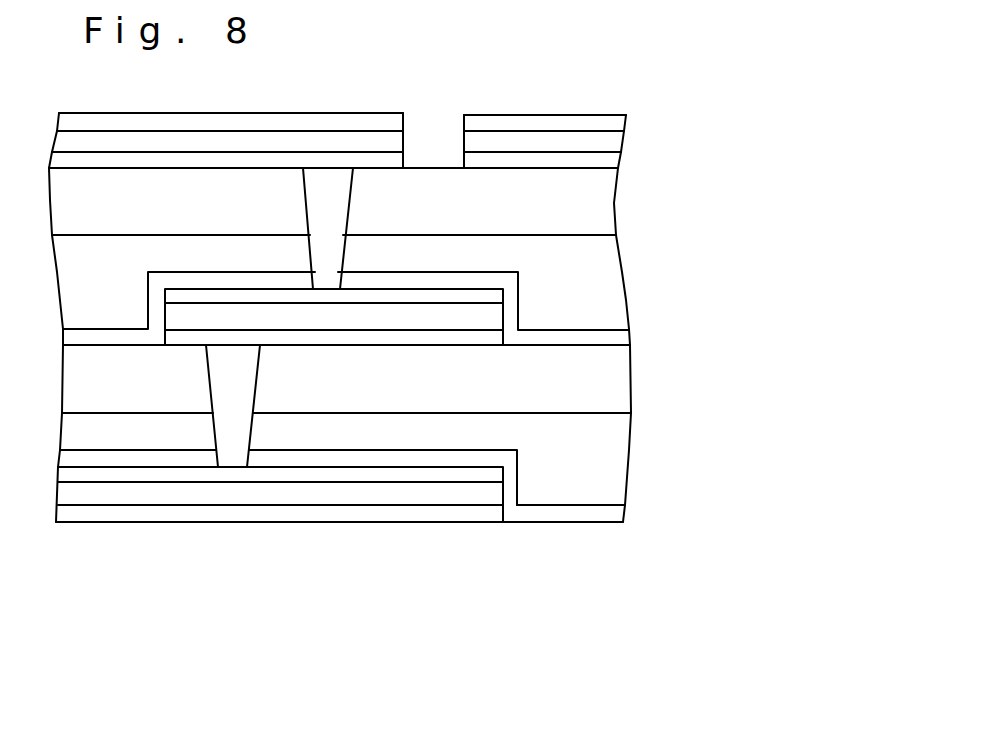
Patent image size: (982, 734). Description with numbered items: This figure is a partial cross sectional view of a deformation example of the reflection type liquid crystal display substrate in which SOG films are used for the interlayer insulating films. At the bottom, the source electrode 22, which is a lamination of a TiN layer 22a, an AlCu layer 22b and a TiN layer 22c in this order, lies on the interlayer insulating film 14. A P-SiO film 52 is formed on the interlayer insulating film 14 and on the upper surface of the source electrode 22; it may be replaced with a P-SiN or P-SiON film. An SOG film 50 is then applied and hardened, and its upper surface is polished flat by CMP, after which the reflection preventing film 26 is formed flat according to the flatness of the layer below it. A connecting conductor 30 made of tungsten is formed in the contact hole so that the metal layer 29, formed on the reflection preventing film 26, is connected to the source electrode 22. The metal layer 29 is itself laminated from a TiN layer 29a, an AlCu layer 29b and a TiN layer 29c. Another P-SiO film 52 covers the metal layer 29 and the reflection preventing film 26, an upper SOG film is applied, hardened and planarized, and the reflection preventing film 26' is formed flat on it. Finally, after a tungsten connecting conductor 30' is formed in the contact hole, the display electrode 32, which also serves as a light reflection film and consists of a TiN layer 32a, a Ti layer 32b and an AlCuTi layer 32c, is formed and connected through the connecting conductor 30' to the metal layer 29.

The interlayer insulating film 14 is at (583, 567).
The source electrode 22 is at (280, 537).
The TiN layer 22a is at (455, 535).
The AlCu layer 22b is at (368, 490).
The TiN layer 22c is at (327, 475).
The reflection preventing film 26 is at (398, 395).
The reflection preventing film 26' is at (393, 201).
The metal layer 29 is at (334, 349).
The TiN layer 29a is at (352, 380).
The AlCu layer 29b is at (415, 318).
The TiN layer 29c is at (360, 300).
The connecting conductor 30 is at (176, 406).
The connecting conductor 30' is at (276, 228).
The display electrode 32 is at (428, 118).
The TiN layer 32a is at (610, 160).
The Ti layer 32b is at (615, 143).
The AlCuTi layer 32c is at (628, 123).
The SOG film 50 is at (394, 477).
The P-SiO film 52 is at (628, 338).